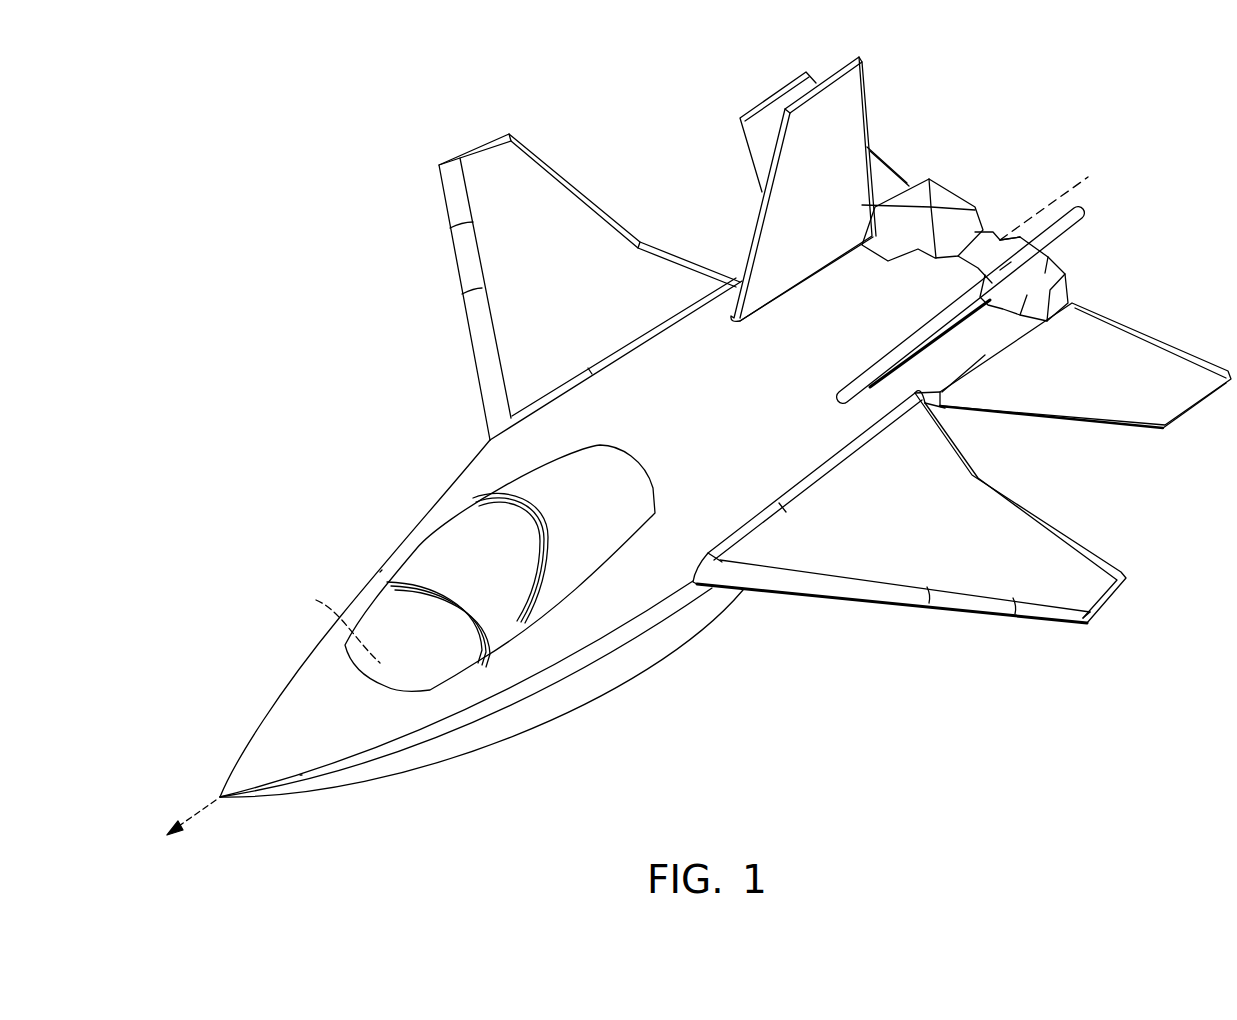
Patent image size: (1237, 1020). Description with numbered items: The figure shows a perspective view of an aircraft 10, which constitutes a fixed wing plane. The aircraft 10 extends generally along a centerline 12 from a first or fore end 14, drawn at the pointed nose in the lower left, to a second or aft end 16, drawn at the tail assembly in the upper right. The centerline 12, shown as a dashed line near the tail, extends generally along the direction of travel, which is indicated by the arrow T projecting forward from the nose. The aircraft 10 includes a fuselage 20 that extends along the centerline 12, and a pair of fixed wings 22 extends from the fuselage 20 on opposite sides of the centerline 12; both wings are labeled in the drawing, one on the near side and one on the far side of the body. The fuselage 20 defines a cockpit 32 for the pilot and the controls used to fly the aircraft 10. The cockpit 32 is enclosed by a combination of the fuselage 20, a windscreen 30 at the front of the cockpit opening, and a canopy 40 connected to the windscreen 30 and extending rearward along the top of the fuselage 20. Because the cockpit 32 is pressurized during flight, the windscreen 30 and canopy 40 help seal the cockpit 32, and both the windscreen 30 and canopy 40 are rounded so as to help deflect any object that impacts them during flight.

The aircraft 10 is at (225, 155).
The centerline 12 is at (1048, 205).
The fore end 14 is at (321, 797).
The aft end 16 is at (1130, 479).
The fuselage 20 is at (390, 730).
The fixed wings 22 is at (782, 378).
The windscreen 30 is at (404, 640).
The cockpit 32 is at (331, 626).
The canopy 40 is at (440, 520).
The direction of travel T is at (206, 808).